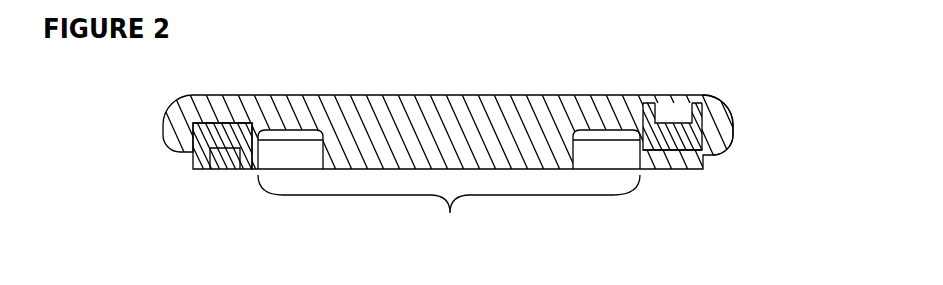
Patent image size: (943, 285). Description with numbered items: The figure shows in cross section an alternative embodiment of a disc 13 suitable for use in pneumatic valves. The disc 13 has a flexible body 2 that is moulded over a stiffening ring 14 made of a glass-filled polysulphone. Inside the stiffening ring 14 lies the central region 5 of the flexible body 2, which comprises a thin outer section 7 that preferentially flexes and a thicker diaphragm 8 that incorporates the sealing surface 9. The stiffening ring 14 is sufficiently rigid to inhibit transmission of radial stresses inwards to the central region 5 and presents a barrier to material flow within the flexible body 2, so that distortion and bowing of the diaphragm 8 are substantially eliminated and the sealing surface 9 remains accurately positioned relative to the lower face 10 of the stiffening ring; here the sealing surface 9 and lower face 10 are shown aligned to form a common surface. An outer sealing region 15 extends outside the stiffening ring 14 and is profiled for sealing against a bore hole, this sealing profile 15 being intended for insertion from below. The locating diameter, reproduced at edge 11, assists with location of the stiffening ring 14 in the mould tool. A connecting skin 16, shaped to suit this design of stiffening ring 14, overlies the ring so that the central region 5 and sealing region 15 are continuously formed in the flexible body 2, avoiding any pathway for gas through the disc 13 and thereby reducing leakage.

The flexible body 2 is at (412, 115).
The central region 5 is at (449, 213).
The thin outer section 7 is at (287, 102).
The diaphragm 8 is at (385, 112).
The sealing surface 9 is at (352, 168).
The lower face of the stiffening ring 10 is at (672, 169).
The edge 11 is at (190, 163).
The disc 13 is at (128, 119).
The stiffening ring 14 is at (689, 150).
The outer sealing region 15 is at (735, 128).
The connecting skin 16 is at (698, 103).